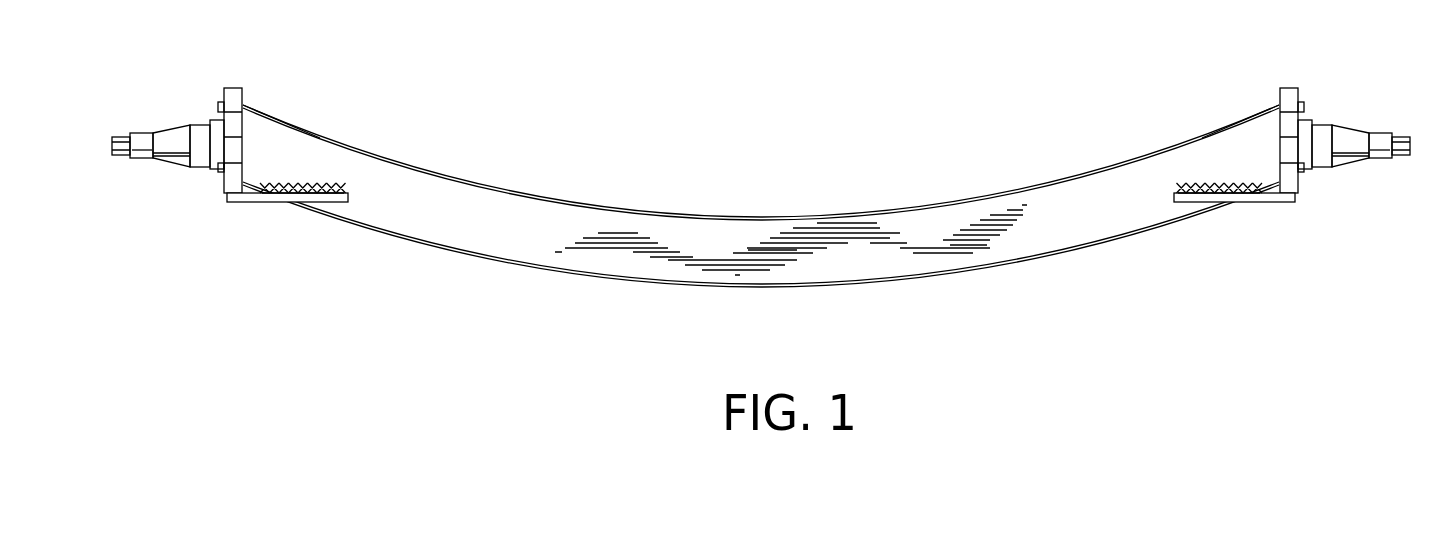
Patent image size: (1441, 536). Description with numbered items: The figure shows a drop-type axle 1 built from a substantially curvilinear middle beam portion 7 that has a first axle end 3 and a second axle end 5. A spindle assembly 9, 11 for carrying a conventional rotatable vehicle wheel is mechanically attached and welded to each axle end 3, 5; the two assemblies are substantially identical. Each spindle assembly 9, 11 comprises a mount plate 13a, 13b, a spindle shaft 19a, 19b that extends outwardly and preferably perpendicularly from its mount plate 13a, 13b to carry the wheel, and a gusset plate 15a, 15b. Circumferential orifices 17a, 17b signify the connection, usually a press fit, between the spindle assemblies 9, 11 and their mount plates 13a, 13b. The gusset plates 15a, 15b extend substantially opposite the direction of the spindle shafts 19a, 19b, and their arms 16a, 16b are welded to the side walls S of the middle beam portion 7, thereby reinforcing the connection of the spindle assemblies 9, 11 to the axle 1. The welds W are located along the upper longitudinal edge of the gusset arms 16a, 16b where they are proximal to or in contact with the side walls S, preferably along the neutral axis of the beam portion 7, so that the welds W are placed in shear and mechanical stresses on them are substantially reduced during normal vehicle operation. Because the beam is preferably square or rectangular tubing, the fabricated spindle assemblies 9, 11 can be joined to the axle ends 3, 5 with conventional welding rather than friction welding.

The axle 1 is at (732, 170).
The first axle end 3 is at (253, 130).
The second axle end 5 is at (1270, 125).
The middle beam portion 7 is at (737, 240).
The spindle assembly 9 is at (210, 112).
The spindle assembly 11 is at (1320, 117).
The mount plate 13a is at (230, 177).
The mount plate 13b is at (1290, 98).
The gusset plate 15a is at (257, 203).
The gusset plate 15b is at (1237, 207).
The gusset plate arm 16a is at (340, 192).
The gusset plate arm 16b is at (1187, 200).
The circumferential orifice 17a is at (215, 173).
The circumferential orifice 17b is at (1301, 168).
The spindle shaft 19a is at (142, 152).
The spindle shaft 19b is at (1353, 153).
The weld W is at (308, 182).
The side wall S is at (505, 237).